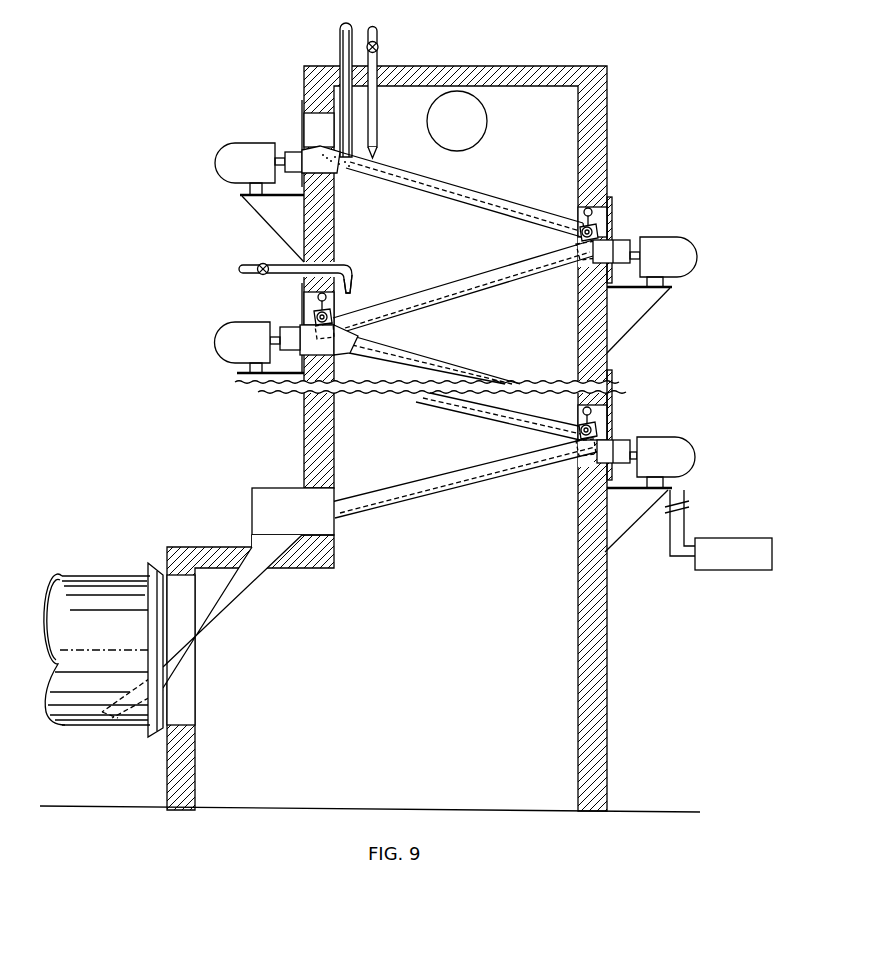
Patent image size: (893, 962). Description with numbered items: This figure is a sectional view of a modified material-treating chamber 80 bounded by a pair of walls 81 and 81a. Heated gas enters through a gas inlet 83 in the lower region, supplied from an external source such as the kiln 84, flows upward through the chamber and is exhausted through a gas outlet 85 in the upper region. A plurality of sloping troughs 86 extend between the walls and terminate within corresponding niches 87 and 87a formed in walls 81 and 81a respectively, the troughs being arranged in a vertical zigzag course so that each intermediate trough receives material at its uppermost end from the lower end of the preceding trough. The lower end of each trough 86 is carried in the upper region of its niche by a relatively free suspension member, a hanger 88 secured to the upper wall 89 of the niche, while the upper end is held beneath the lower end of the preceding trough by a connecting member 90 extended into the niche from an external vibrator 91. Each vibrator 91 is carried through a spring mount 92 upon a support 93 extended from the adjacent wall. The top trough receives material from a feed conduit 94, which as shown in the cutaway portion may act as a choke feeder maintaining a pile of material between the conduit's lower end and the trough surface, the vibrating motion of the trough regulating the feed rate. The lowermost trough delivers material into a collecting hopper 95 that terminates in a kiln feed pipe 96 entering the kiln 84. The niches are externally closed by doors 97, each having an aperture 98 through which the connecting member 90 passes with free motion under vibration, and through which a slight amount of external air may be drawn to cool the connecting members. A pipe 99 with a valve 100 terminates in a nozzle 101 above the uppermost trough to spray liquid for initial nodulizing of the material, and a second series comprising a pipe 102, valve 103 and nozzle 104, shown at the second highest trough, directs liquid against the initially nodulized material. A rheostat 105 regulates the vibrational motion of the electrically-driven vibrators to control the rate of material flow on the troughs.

The chamber 80 is at (455, 438).
The wall 81 is at (335, 220).
The wall 81a is at (578, 152).
The gas inlet 83 is at (196, 680).
The kiln 84 is at (100, 577).
The gas outlet 85 is at (487, 115).
The sloping trough 86 is at (465, 190).
The niche 87 is at (338, 176).
The niche 87a is at (580, 266).
The hanger 88 is at (580, 212).
The upper wall of niche 89 is at (612, 207).
The connecting member 90 is at (615, 242).
The vibrator 91 is at (694, 240).
The spring mount 92 is at (668, 284).
The support 93 is at (648, 316).
The feed conduit 94 is at (338, 36).
The collecting hopper 95 is at (250, 500).
The kiln feed pipe 96 is at (245, 588).
The door 97 is at (612, 405).
The aperture 98 is at (615, 440).
The pipe 99 is at (377, 28).
The valve 100 is at (380, 47).
The nozzle 101 is at (378, 143).
The pipe 102 is at (243, 274).
The valve 103 is at (264, 262).
The nozzle 104 is at (356, 292).
The rheostat 105 is at (740, 538).